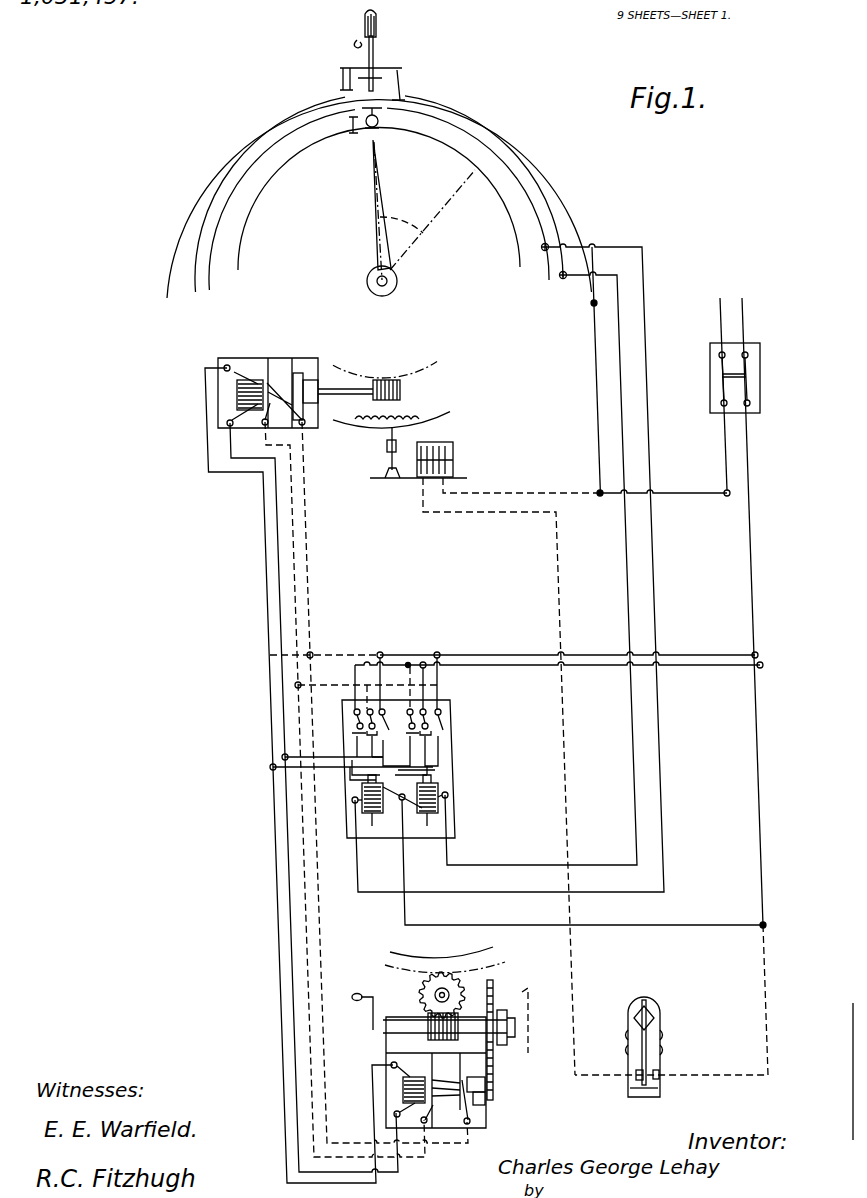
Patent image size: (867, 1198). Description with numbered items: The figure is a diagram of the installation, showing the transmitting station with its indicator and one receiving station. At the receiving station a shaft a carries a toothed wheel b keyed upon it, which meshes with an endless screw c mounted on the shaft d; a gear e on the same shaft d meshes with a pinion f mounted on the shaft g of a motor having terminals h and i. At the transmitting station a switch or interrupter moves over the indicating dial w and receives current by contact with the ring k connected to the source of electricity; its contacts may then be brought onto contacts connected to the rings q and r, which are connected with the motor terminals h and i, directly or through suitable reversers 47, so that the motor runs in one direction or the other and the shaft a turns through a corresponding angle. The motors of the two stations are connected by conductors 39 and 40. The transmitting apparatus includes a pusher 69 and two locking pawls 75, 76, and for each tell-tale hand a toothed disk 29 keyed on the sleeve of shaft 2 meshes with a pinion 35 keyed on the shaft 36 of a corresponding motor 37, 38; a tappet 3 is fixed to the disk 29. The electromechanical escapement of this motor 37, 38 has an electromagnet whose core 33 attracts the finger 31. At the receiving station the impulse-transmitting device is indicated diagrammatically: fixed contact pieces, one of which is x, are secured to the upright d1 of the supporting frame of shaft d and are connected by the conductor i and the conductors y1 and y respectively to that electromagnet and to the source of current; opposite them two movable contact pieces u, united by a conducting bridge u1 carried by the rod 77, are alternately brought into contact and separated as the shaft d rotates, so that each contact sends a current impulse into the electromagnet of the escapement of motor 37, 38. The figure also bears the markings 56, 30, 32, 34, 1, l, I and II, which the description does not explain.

The pusher 69 is at (377, 22).
The locking pawl 75 is at (347, 67).
The locking pawl 76 is at (396, 67).
The tappet 3 is at (351, 126).
The contact 56 is at (380, 123).
The ring k is at (502, 103).
The ring r is at (512, 146).
The ring q is at (530, 190).
The indicating dial w is at (523, 262).
The pointer I is at (376, 234).
The reference line II is at (431, 248).
The shaft 2 is at (377, 292).
The operating motor 37 is at (268, 383).
The operating motor 38 is at (224, 424).
The pinion 35 is at (386, 379).
The shaft 36 is at (351, 396).
The toothed disk 29 is at (431, 367).
The arc 30 is at (369, 428).
The finger 31 is at (387, 452).
The electromagnet 32 is at (424, 445).
The core 33 is at (398, 480).
The conductor 34 is at (523, 496).
The conductor 1 is at (486, 517).
The reverser 47 is at (421, 816).
The conductor 39 is at (278, 910).
The conductor 40 is at (290, 950).
The shaft a is at (440, 990).
The arc l is at (450, 958).
The toothed wheel b is at (417, 993).
The endless screw c is at (494, 992).
The shaft d is at (384, 1045).
The gear e is at (430, 1040).
The pinion f is at (488, 1088).
The motor shaft g is at (487, 1097).
The motor terminal i is at (391, 1067).
The motor terminal h is at (394, 1116).
The rod 77 is at (658, 1033).
The upright d1 is at (630, 1053).
The contact piece x is at (660, 1072).
The contact piece u is at (660, 1088).
The conducting bridge u1 is at (655, 1096).
The conductor y is at (761, 737).
The conductor y1 is at (770, 993).